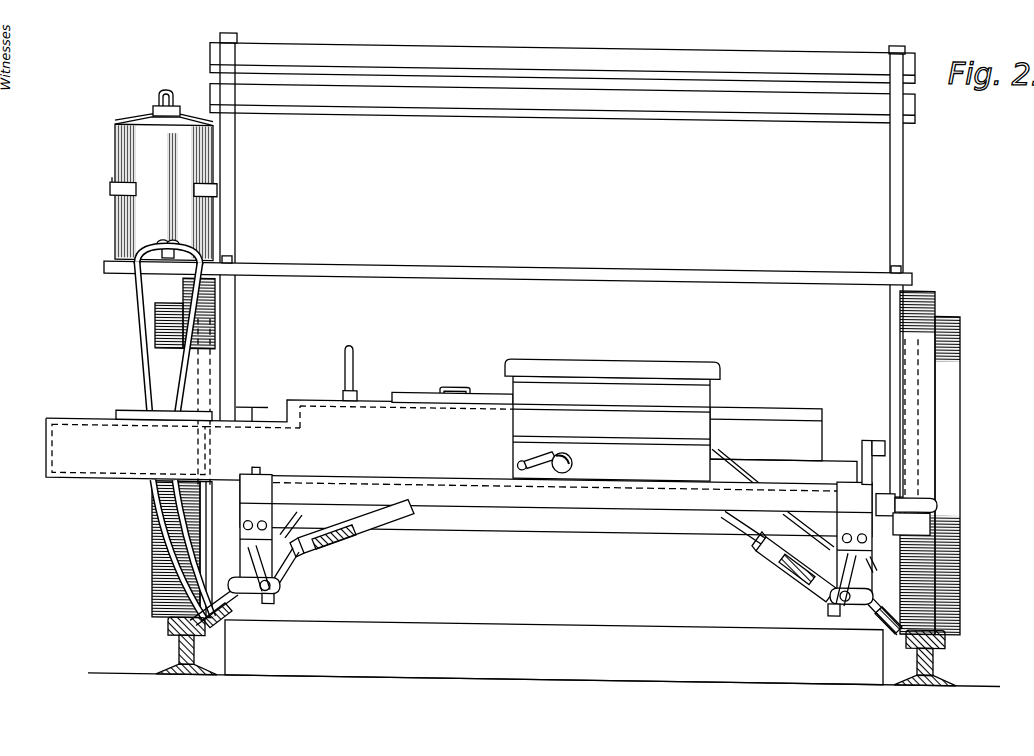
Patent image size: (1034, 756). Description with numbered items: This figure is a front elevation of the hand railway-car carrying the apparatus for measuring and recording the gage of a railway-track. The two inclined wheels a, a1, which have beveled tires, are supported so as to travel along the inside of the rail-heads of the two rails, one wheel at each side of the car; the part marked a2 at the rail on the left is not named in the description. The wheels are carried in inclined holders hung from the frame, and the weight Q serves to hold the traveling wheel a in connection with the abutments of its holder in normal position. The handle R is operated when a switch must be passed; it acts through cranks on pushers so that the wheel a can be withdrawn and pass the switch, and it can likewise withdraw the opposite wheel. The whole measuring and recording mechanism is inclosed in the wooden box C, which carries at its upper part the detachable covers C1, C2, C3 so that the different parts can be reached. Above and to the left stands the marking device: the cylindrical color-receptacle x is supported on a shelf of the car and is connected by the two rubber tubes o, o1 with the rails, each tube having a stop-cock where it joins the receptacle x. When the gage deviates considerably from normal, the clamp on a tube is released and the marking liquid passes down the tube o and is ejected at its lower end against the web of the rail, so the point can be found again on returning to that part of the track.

The cylindrical color-receptacle x is at (163, 175).
The rubber tube o is at (140, 338).
The rubber tube o1 is at (186, 367).
The detachable cover C3 is at (118, 412).
The handle R is at (354, 349).
The detachable cover C2 is at (481, 391).
The detachable cover C1 is at (628, 362).
The wooden box C is at (712, 392).
The weight Q is at (573, 460).
The inclined wheel a is at (320, 562).
The inclined wheel a1 is at (786, 574).
The rail a2 is at (172, 657).